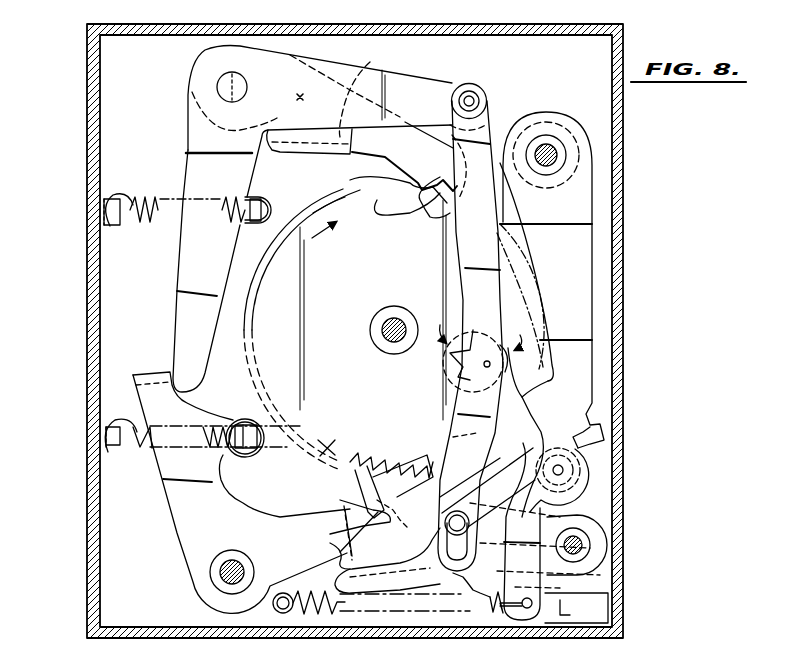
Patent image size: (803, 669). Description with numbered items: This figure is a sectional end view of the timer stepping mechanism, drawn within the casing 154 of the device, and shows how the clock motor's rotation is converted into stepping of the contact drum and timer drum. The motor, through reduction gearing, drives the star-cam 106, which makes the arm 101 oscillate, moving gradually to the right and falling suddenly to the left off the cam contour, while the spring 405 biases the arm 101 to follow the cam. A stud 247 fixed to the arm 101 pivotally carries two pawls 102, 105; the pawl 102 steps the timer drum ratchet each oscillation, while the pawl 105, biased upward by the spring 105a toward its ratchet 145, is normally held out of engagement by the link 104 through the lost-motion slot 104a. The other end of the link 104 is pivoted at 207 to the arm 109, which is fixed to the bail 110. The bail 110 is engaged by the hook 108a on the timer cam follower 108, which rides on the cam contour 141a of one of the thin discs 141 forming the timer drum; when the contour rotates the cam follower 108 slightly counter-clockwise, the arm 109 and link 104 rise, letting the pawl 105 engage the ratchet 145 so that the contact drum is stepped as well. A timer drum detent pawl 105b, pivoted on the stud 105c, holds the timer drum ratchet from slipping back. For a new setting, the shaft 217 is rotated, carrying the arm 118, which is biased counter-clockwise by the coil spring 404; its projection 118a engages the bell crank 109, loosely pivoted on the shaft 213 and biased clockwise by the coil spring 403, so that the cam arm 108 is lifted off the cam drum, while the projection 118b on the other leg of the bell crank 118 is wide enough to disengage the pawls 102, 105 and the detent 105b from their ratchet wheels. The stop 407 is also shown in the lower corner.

The arm 101 is at (593, 308).
The pawl 102 is at (420, 472).
The link 104 is at (465, 264).
The slot 104a is at (480, 541).
The pawl 105 is at (428, 530).
The spring 105a is at (610, 440).
The timer drum detent pawl 105b is at (357, 458).
The stud 105c is at (587, 547).
The star-cam 106 is at (455, 372).
The timer cam follower 108 is at (390, 160).
The hook 108a is at (338, 164).
The arm 109 is at (422, 73).
The bail 110 is at (372, 68).
The arm 118 is at (183, 495).
The projection 118a is at (128, 373).
The projection 118b is at (343, 523).
The discs 141 is at (350, 180).
The cam contour 141a is at (445, 208).
The ratchet 145 is at (337, 450).
The housing 154 is at (93, 338).
The pivot 207 is at (471, 101).
The shaft 213 is at (217, 82).
The shaft 217 is at (217, 575).
The stud 247 is at (573, 472).
The coil spring 403 is at (146, 197).
The coil spring 404 is at (202, 428).
The spring 405 is at (484, 620).
The stop block 407 is at (584, 611).